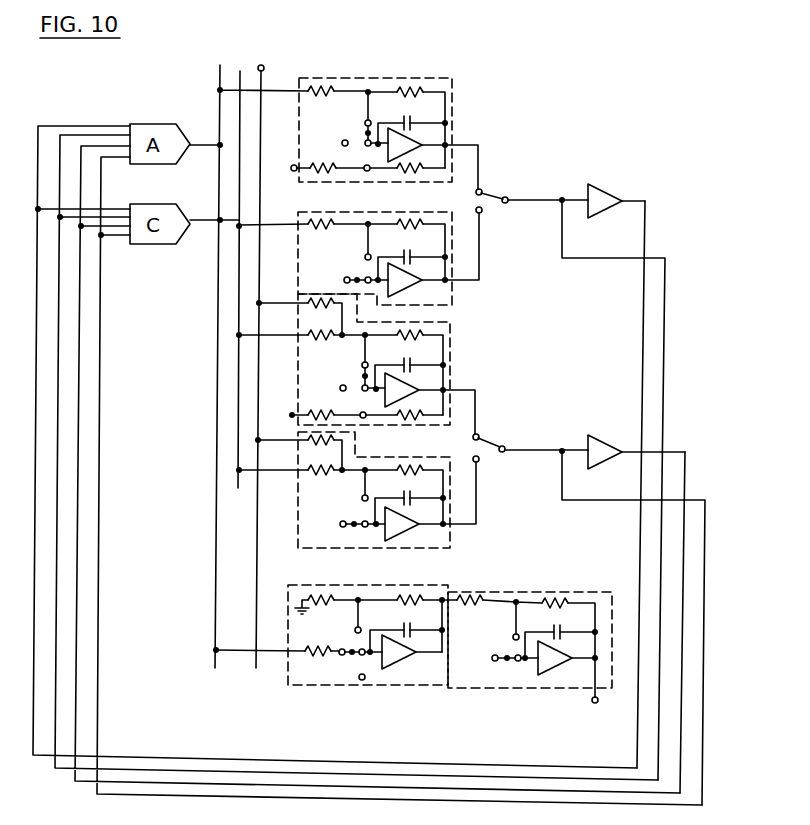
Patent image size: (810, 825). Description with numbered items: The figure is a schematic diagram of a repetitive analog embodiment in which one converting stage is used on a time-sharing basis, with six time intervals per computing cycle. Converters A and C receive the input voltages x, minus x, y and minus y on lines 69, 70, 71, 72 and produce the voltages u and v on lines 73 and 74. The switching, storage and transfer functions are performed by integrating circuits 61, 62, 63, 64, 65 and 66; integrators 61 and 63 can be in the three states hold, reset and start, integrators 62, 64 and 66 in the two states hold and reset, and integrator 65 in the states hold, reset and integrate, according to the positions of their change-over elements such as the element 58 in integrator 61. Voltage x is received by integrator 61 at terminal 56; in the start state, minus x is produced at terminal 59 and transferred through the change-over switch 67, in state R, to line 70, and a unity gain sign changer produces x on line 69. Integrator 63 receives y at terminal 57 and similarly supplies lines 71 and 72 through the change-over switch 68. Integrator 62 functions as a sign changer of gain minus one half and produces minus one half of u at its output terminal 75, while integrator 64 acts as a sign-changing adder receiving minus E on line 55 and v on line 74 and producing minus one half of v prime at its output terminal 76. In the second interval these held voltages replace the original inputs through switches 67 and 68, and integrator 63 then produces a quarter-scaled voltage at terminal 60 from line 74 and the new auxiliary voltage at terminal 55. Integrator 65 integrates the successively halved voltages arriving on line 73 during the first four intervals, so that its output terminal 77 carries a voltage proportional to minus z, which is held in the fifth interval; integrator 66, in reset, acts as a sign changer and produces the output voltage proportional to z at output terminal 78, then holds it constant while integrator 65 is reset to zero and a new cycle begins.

The line 55 is at (280, 358).
The terminal 56 is at (286, 164).
The terminal 57 is at (285, 408).
The change-over element 58 is at (365, 133).
The terminal 59 is at (466, 156).
The terminal 60 is at (464, 402).
The integrator 61 is at (374, 120).
The integrator 62 is at (431, 216).
The integrator 63 is at (375, 360).
The integrator 64 is at (438, 462).
The integrator 65 is at (388, 591).
The integrator 66 is at (537, 592).
The change-over switch 67 is at (500, 194).
The change-over switch 68 is at (499, 441).
The line 69 is at (631, 484).
The line 70 is at (625, 490).
The line 71 is at (696, 619).
The line 72 is at (647, 628).
The line 73 is at (255, 361).
The line 74 is at (268, 272).
The output terminal 75 is at (473, 252).
The output terminal 76 is at (472, 499).
The output terminal 77 is at (446, 596).
The output terminal 78 is at (597, 692).